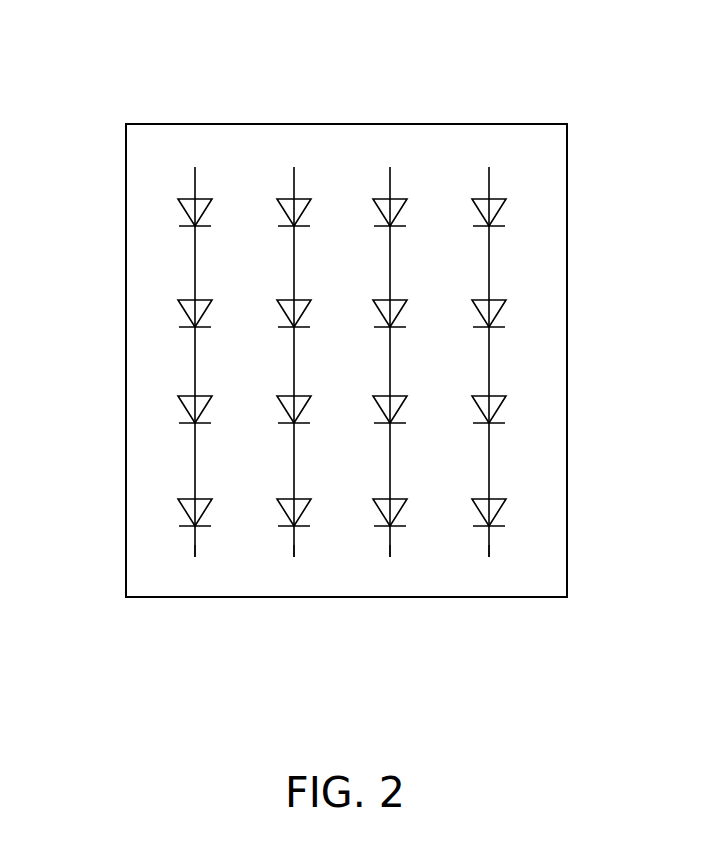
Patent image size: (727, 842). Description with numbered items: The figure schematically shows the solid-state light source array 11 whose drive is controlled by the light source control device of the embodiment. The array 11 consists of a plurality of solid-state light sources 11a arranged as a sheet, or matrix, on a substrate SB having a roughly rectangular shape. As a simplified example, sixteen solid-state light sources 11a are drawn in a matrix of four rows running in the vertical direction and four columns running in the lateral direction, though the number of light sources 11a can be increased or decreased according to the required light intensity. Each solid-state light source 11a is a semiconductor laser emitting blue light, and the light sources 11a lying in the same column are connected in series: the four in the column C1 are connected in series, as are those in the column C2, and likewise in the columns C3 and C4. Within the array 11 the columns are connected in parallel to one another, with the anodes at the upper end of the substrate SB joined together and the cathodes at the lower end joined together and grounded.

The solid-state light source array 11 is at (342, 340).
The substrate SB is at (532, 123).
The solid-state light source 11a is at (184, 412).
The column C1 is at (194, 570).
The column C2 is at (293, 570).
The column C3 is at (390, 570).
The column C4 is at (489, 570).